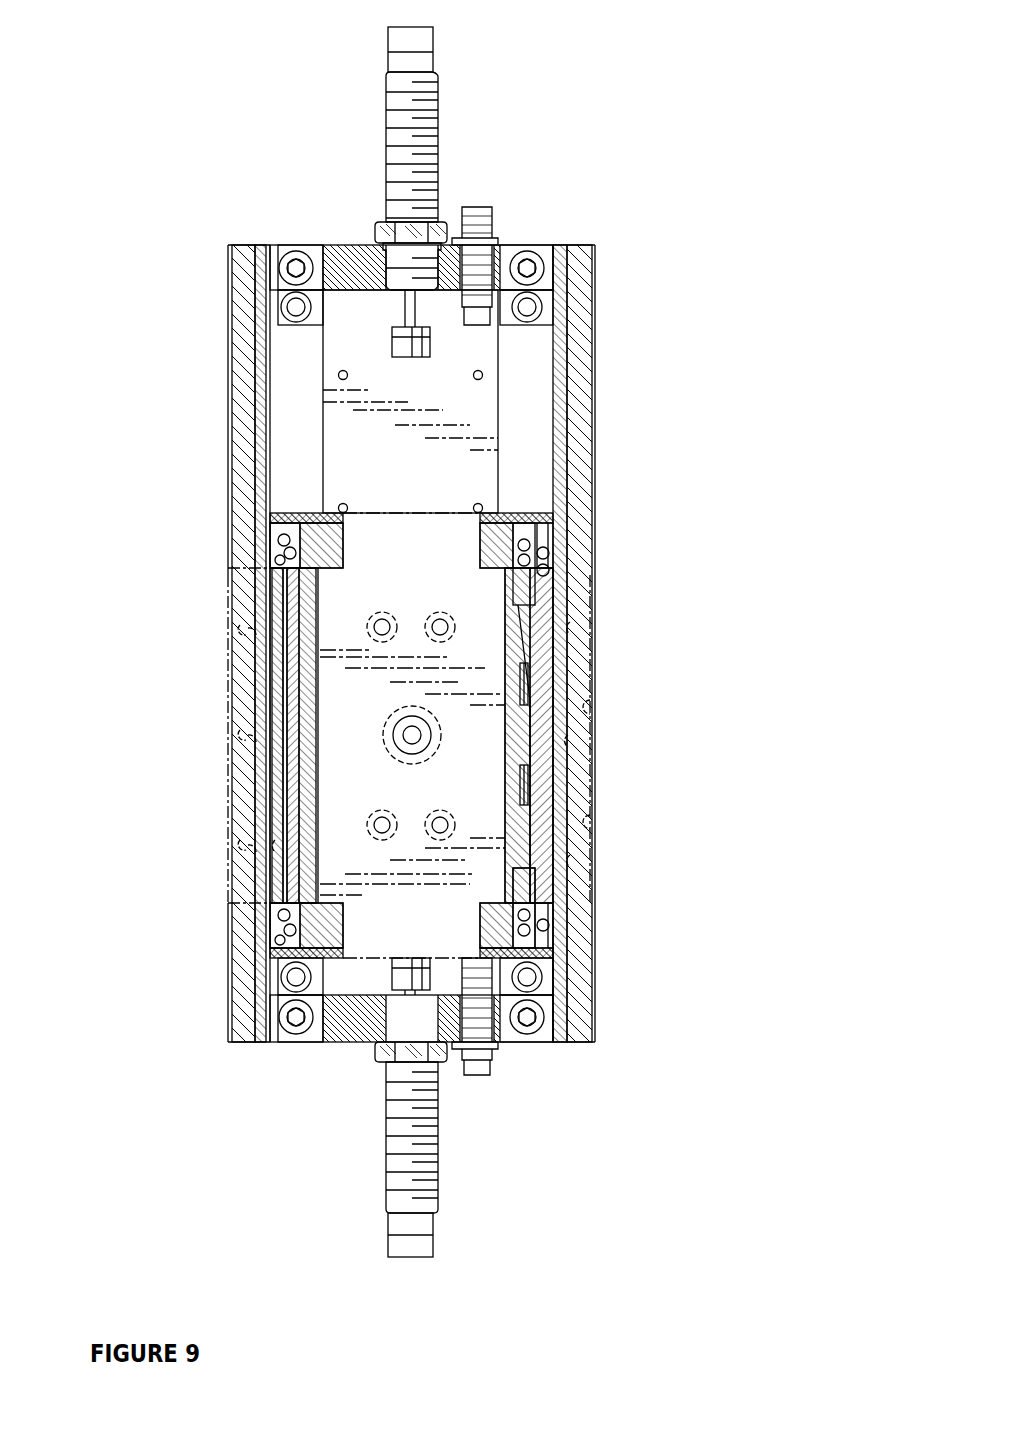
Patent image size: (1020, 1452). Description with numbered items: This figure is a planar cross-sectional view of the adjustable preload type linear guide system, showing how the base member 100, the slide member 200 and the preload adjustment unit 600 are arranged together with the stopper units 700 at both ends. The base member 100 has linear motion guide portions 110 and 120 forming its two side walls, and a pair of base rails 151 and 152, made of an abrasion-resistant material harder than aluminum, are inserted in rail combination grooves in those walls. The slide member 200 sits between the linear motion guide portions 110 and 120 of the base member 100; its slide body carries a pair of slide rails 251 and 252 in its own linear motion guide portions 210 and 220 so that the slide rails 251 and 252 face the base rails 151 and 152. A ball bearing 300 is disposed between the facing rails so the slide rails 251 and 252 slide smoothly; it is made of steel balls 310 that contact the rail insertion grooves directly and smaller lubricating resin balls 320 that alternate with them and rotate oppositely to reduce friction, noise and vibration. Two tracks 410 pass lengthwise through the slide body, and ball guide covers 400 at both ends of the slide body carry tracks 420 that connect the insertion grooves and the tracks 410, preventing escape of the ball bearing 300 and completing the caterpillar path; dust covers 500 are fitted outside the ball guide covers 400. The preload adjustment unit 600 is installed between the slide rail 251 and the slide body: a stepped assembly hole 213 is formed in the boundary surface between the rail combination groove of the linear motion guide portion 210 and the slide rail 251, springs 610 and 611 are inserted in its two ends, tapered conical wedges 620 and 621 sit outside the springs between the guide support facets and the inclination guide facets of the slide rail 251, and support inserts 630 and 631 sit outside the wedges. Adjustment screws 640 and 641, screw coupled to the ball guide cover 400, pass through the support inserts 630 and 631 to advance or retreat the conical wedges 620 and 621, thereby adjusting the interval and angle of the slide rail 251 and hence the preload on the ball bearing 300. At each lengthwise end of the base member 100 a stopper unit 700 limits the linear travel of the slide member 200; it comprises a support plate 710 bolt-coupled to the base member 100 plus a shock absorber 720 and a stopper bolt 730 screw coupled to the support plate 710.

The base member 100 is at (286, 428).
The linear motion guide portion 110 is at (575, 428).
The linear motion guide portion 120 is at (240, 388).
The base rail 151 is at (562, 325).
The base rail 152 is at (262, 350).
The slide member 200 is at (263, 588).
The linear motion guide portion 210 is at (503, 623).
The stepped assembly hole 213 is at (575, 738).
The linear motion guide portion 220 is at (270, 697).
The slide rail 251 is at (590, 707).
The slide rail 252 is at (270, 845).
The ball bearing 300 is at (578, 998).
The steel ball 310 is at (580, 980).
The resin ball 320 is at (568, 950).
The ball guide cover 400 is at (283, 547).
The track 410 is at (265, 738).
The track 420 is at (575, 930).
The dust cover 500 is at (272, 520).
The preload adjustment unit 600 is at (690, 650).
The spring 610 is at (545, 775).
The spring 611 is at (555, 680).
The conical wedge 620 is at (590, 823).
The conical wedge 621 is at (565, 632).
The support insert 630 is at (565, 862).
The support insert 631 is at (585, 584).
The adjustment screw 640 is at (587, 887).
The adjustment screw 641 is at (565, 555).
The stopper unit 700 is at (490, 168).
The support plate 710 is at (350, 245).
The shock absorber 720 is at (393, 118).
The stopper bolt 730 is at (413, 235).